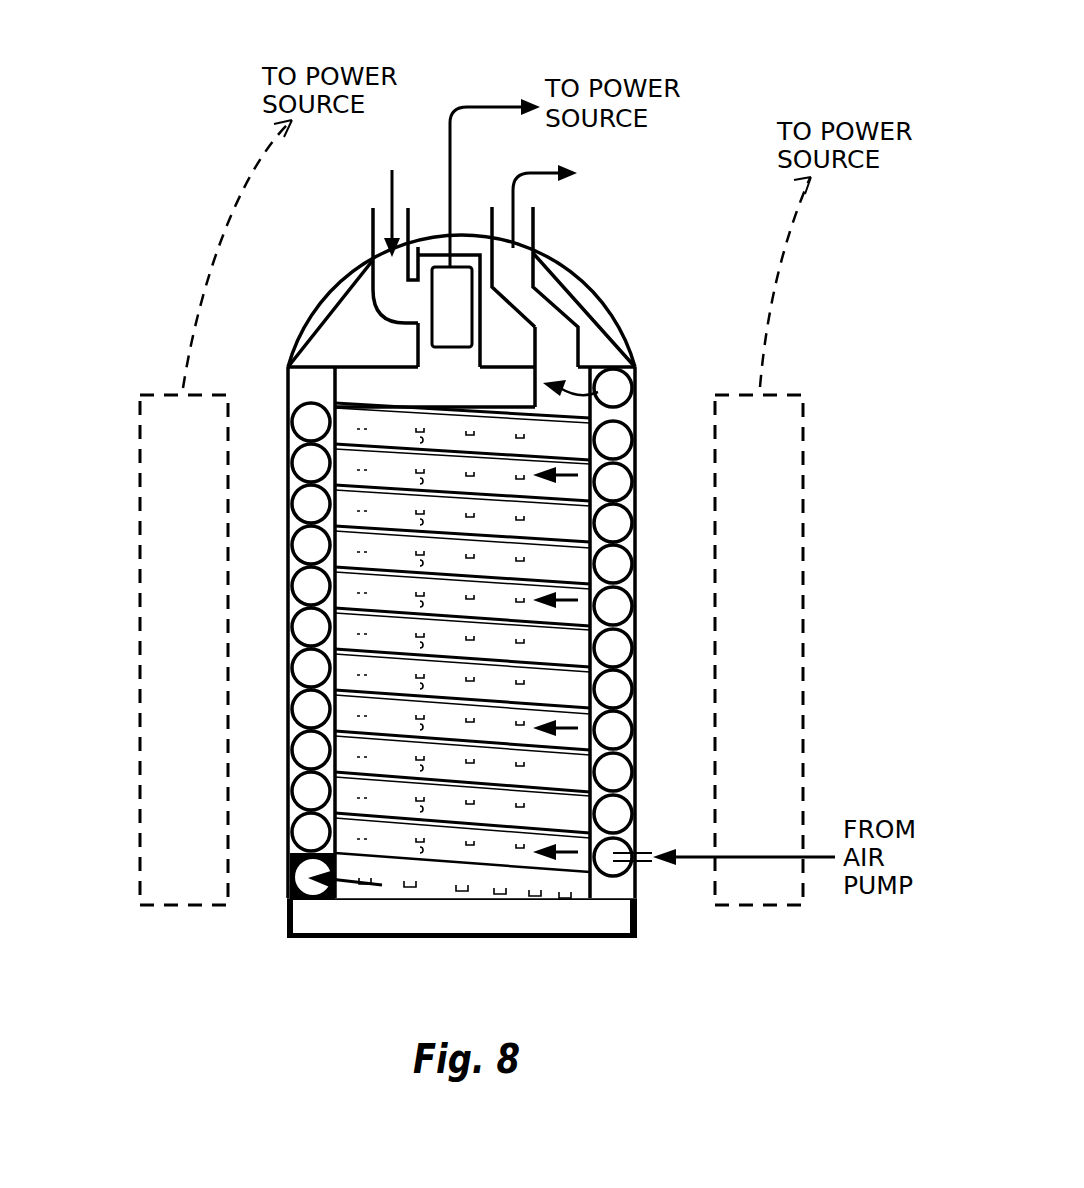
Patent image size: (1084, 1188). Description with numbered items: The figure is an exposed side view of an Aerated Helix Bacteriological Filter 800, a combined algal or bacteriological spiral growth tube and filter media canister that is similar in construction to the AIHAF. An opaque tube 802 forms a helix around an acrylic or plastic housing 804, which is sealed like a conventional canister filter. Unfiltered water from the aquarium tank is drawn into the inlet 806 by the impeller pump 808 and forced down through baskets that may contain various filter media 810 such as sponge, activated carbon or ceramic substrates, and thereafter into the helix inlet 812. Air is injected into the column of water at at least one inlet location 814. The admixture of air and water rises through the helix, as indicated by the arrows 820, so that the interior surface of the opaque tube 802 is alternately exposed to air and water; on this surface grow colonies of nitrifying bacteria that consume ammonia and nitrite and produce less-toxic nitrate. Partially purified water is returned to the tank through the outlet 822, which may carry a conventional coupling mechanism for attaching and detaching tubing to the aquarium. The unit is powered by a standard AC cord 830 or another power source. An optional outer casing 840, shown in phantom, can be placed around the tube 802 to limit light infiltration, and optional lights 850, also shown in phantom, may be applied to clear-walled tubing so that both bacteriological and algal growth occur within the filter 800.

The Aerated Helix Bacteriological Filter 800 is at (633, 262).
The opaque tube 802 is at (632, 597).
The housing 804 is at (598, 413).
The inlet 806 is at (408, 217).
The impeller pump 808 is at (433, 330).
The filter media 810 is at (442, 792).
The helix inlet 812 is at (292, 897).
The air inlet location 814 is at (642, 862).
The arrows 820 is at (570, 477).
The outlet 822 is at (533, 220).
The AC cord 830 is at (500, 107).
The outer casing 840 is at (638, 630).
The lights 850 is at (763, 480).